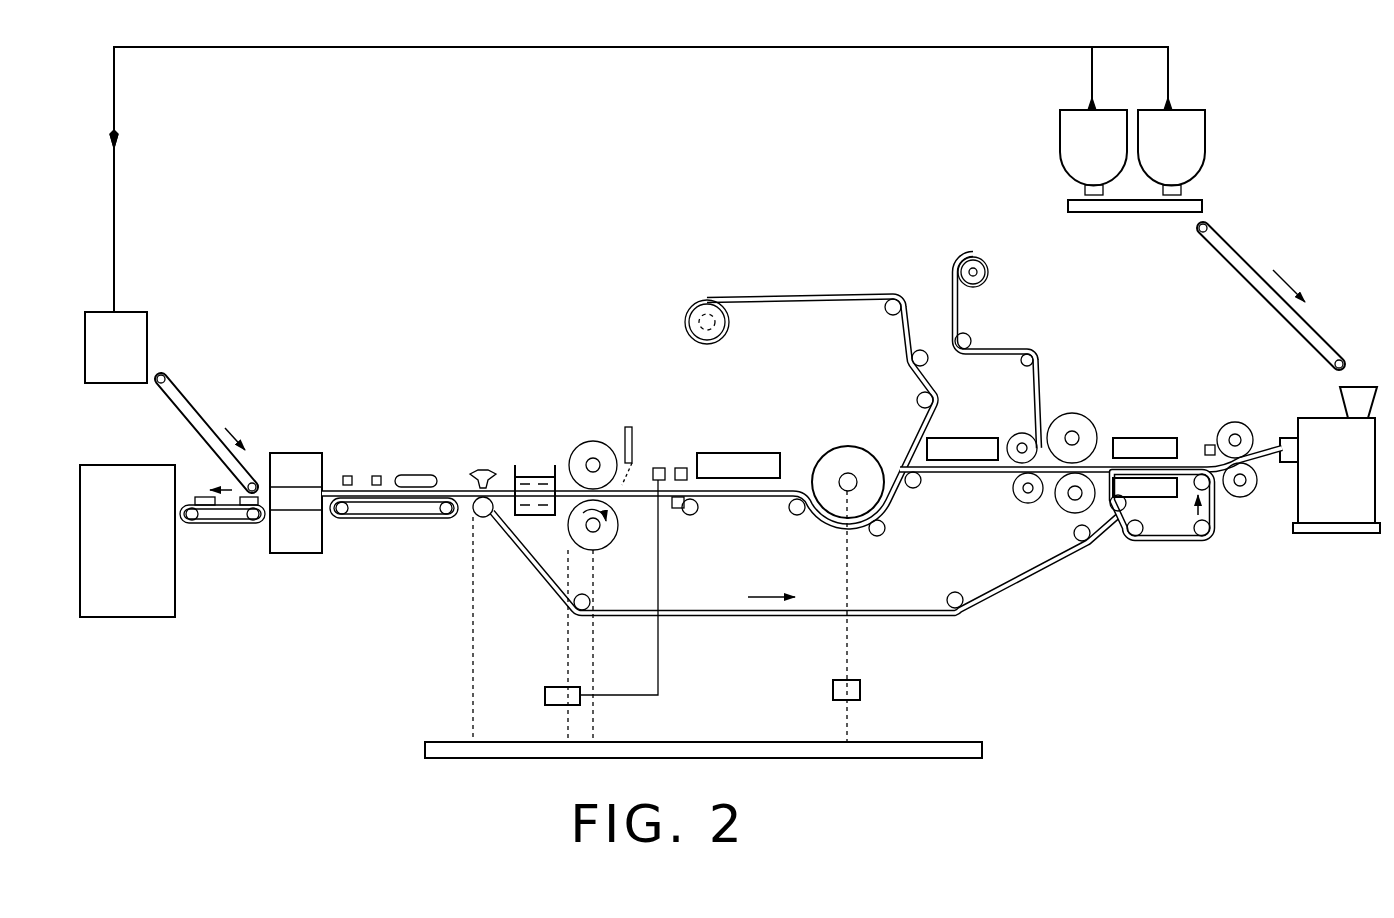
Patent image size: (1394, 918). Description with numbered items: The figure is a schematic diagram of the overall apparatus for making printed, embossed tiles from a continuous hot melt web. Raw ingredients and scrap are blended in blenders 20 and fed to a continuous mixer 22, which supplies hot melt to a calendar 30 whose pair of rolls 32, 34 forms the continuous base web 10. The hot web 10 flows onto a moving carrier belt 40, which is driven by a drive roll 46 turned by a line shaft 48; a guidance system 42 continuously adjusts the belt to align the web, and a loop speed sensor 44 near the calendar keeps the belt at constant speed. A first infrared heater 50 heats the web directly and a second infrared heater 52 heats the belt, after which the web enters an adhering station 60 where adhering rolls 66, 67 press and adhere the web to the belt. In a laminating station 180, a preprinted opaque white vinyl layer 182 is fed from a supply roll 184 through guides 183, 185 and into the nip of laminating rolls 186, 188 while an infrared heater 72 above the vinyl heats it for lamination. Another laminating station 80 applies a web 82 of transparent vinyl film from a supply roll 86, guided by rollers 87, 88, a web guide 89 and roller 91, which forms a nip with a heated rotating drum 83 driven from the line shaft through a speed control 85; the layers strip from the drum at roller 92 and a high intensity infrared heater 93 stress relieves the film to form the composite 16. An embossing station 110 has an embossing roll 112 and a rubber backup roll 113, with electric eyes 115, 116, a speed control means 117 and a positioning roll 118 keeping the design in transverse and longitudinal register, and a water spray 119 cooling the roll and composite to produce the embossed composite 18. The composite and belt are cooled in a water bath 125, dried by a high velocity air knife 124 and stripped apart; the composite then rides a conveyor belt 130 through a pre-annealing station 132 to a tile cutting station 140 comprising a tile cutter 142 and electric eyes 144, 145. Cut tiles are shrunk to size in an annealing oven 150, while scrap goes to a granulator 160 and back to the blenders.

The hot melt base web 10 is at (1180, 465).
The composite 16 is at (623, 482).
The embossed composite web 18 is at (471, 460).
The blenders 20 is at (1080, 161).
The continuous mixer 22 is at (1320, 462).
The calendar 30 is at (1259, 437).
The calendar roll 32 is at (1246, 424).
The calendar roll 34 is at (1240, 498).
The carrier belt 40 is at (542, 590).
The guidance system 42 is at (1212, 538).
The loop speed sensor 44 is at (1211, 444).
The drive roll 46 is at (485, 517).
The line shaft 48 is at (697, 742).
The first infrared heater 50 is at (1148, 438).
The second infrared heater 52 is at (1152, 498).
The adhering station 60 is at (1134, 379).
The adhering roll 66 is at (1078, 418).
The adhering roll 67 is at (1072, 512).
The infrared heater 72 is at (960, 438).
The laminating station 80 is at (859, 534).
The web of transparent vinyl film 82 is at (822, 304).
The heated rotating drum 83 is at (846, 446).
The speed control 85 is at (832, 683).
The supply roll 86 is at (723, 338).
The roller 87 is at (886, 313).
The roller 88 is at (927, 364).
The web guide 89 is at (918, 398).
The roller 91 is at (884, 531).
The roller 92 is at (798, 516).
The high intensity infrared heater 93 is at (758, 452).
The embossing station 110 is at (587, 432).
The embossing roll 112 is at (602, 442).
The rubber backup roll 113 is at (607, 549).
The electric eye 115 is at (697, 455).
The electric eye 116 is at (661, 467).
The speed control means 117 is at (562, 687).
The positioning roll 118 is at (696, 515).
The water spray 119 is at (630, 427).
The high velocity air knife 124 is at (487, 470).
The water bath 125 is at (550, 466).
The conveyor belt 130 is at (422, 518).
The pre-annealing station 132 is at (420, 474).
The tile cutting station 140 is at (362, 462).
The tile cutter 142 is at (280, 549).
The electric eye 144 is at (378, 476).
The electric eye 145 is at (347, 476).
The annealing oven 150 is at (145, 560).
The granulator 160 is at (98, 367).
The laminating station 180 is at (1008, 483).
The preprinted opaque white vinyl layer 182 is at (962, 300).
The guide 183 is at (970, 339).
The supply roll 184 is at (987, 266).
The guide 185 is at (1033, 357).
The laminating roll 186 is at (1030, 436).
The laminating roll 188 is at (1022, 500).